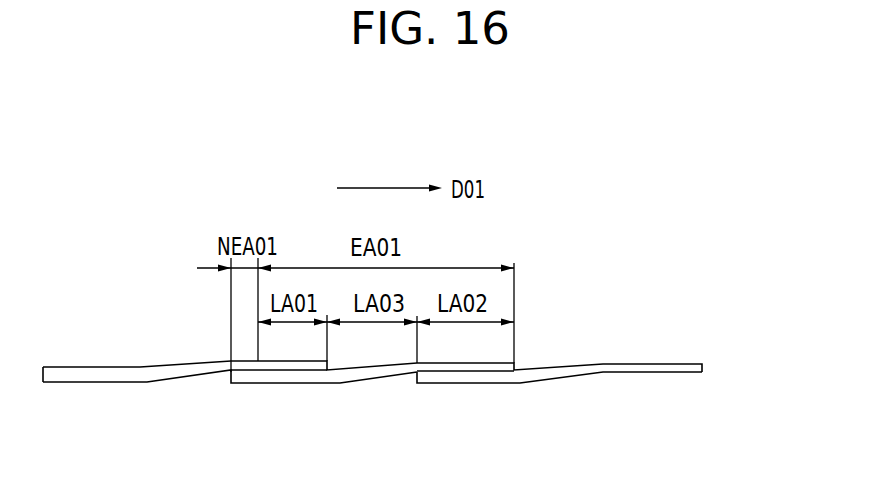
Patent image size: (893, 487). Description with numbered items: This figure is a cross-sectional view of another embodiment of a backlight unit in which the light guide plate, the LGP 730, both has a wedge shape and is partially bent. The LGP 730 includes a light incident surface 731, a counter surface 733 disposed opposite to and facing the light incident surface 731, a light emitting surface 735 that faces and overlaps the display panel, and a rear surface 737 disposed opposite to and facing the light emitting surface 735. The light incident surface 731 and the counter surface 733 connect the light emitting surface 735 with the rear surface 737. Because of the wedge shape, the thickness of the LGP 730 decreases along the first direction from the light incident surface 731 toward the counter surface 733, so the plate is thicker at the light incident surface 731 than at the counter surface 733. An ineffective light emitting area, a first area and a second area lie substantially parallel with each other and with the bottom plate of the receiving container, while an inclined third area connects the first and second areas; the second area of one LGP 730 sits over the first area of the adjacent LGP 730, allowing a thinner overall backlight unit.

The LGP 730 is at (439, 374).
The light incident surface 731 is at (417, 383).
The counter surface 733 is at (702, 369).
The light emitting surface 735 is at (743, 402).
The rear surface 737 is at (412, 394).